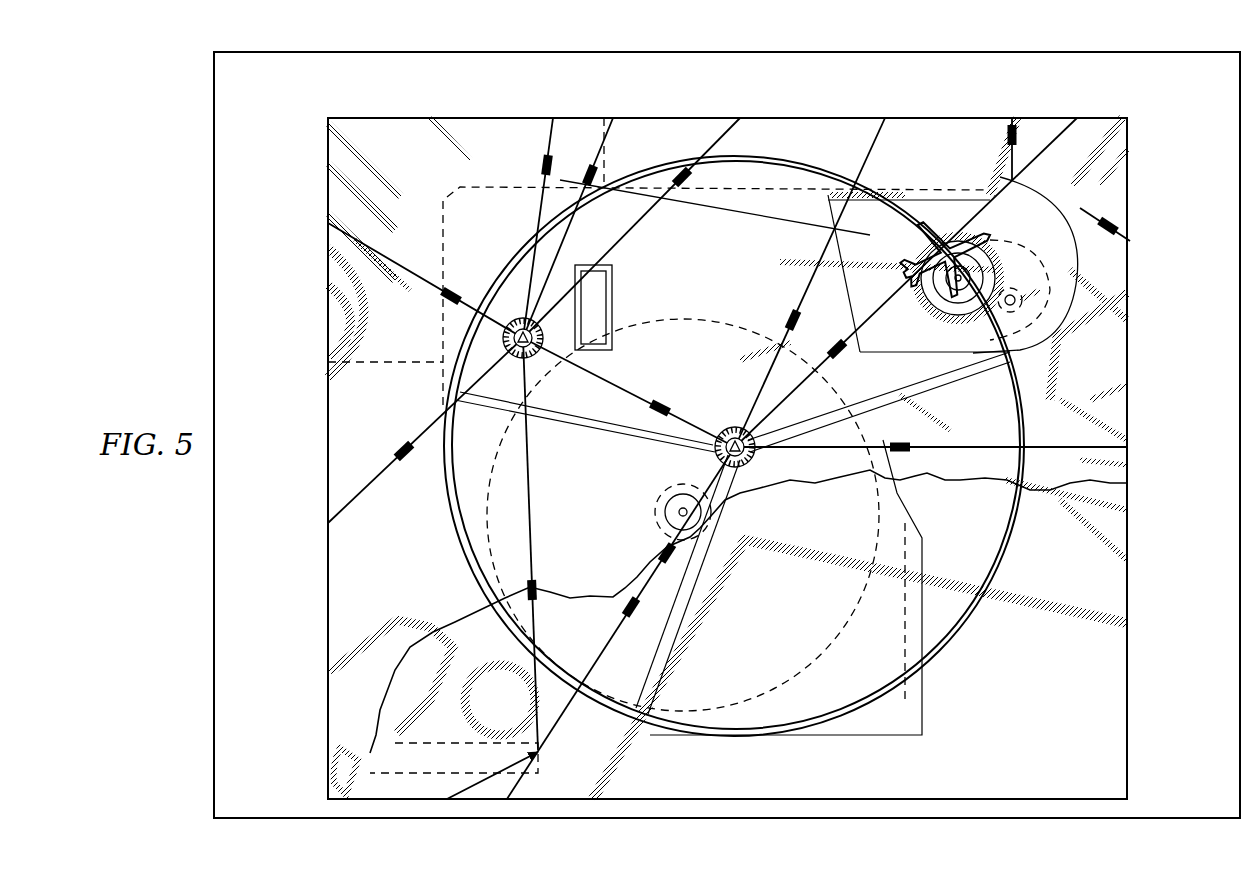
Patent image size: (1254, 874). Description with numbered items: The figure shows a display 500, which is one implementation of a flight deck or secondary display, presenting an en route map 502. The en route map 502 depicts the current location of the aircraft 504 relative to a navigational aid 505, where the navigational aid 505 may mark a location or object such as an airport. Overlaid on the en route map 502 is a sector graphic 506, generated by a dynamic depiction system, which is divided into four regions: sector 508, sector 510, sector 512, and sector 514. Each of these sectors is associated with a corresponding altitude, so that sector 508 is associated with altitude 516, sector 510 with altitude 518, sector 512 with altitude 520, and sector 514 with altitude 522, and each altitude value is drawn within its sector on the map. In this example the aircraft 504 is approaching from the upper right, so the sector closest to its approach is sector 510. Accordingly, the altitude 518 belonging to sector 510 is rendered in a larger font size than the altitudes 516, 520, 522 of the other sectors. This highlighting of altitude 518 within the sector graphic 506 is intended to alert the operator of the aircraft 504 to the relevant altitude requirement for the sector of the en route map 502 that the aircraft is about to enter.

The display 500 is at (727, 435).
The en route map 502 is at (326, 718).
The aircraft 504 is at (1082, 193).
The navigational aid 505 is at (721, 428).
The sector graphic 506 is at (886, 710).
The sector 508 is at (962, 533).
The sector 510 is at (886, 236).
The sector 512 is at (662, 257).
The sector 514 is at (580, 513).
The altitude 516 is at (773, 668).
The altitude 518 is at (943, 338).
The altitude 520 is at (720, 224).
The altitude 522 is at (482, 488).